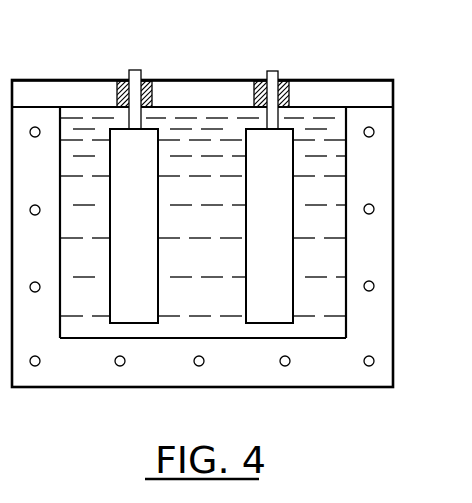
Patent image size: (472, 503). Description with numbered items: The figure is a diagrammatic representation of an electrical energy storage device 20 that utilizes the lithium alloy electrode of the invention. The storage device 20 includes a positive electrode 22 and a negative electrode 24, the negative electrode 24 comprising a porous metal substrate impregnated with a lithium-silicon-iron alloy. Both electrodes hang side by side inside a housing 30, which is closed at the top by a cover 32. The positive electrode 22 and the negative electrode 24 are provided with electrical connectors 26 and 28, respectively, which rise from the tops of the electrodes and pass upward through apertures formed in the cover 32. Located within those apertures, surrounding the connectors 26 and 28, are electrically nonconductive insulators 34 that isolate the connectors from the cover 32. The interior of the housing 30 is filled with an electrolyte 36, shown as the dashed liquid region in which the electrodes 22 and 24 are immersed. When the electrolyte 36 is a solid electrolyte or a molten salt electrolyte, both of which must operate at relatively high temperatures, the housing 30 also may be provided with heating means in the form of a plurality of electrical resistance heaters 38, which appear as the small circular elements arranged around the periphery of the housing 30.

The electrical energy storage device 20 is at (356, 80).
The positive electrode 22 is at (267, 324).
The negative electrode 24 is at (132, 324).
The electrical connector 26 is at (272, 70).
The electrical connector 28 is at (141, 71).
The housing 30 is at (394, 207).
The cover 32 is at (68, 80).
The electrically nonconductive insulator 34 is at (113, 88).
The electrolyte 36 is at (203, 217).
The electrical resistance heater 38 is at (375, 132).